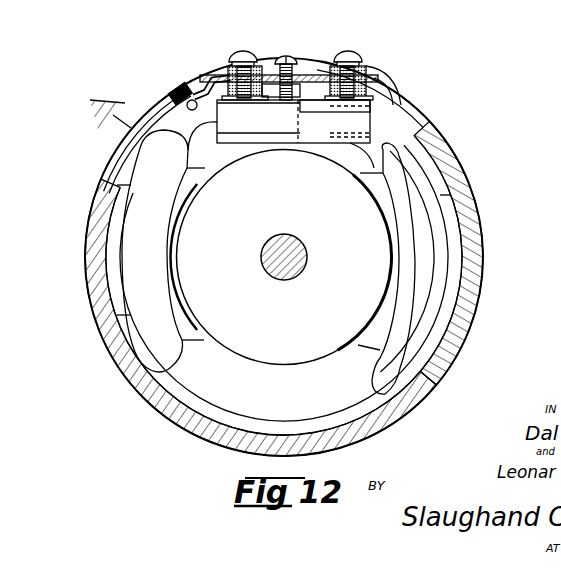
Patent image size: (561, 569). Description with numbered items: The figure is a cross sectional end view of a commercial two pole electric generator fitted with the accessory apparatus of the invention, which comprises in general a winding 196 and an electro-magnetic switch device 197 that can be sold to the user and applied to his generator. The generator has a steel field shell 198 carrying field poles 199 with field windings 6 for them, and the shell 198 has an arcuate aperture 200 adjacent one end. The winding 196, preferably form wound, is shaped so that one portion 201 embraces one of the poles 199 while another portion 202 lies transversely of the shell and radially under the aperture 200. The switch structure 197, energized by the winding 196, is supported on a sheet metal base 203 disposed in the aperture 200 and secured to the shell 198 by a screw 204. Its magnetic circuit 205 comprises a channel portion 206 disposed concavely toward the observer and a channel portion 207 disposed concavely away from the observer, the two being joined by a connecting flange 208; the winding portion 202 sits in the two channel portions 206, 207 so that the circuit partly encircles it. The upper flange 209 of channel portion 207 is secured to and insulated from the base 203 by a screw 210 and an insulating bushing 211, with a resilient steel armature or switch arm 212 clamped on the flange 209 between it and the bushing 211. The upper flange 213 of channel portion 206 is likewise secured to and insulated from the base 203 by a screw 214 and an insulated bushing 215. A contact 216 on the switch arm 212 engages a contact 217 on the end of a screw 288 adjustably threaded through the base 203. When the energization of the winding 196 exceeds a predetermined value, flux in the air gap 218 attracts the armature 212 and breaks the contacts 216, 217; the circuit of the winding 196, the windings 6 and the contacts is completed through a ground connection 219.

The field winding 6 is at (428, 165).
The winding 196 is at (394, 134).
The electro-magnetic switch device 197 is at (221, 70).
The steel field shell 198 is at (466, 190).
The field pole 199 is at (453, 235).
The arcuate aperture 200 is at (389, 87).
The pole-embracing portion of winding 201 is at (480, 288).
The transverse portion of winding 202 is at (300, 146).
The sheet metal base 203 is at (306, 76).
The screw 204 is at (176, 96).
The magnetic circuit 205 is at (335, 144).
The channel portion 206 is at (262, 145).
The channel portion 207 is at (338, 134).
The connecting flange 208 is at (318, 143).
The upper flange 209 is at (370, 80).
The screw 210 is at (350, 55).
The insulating bushing 211 is at (370, 67).
The switch arm 212 is at (317, 76).
The upper flange 213 is at (283, 104).
The screw 214 is at (241, 54).
The insulated bushing 215 is at (223, 65).
The contact 216 is at (296, 92).
The contact 217 is at (292, 92).
The air gap 218 is at (302, 100).
The ground connection 219 is at (125, 118).
The screw 288 is at (284, 57).